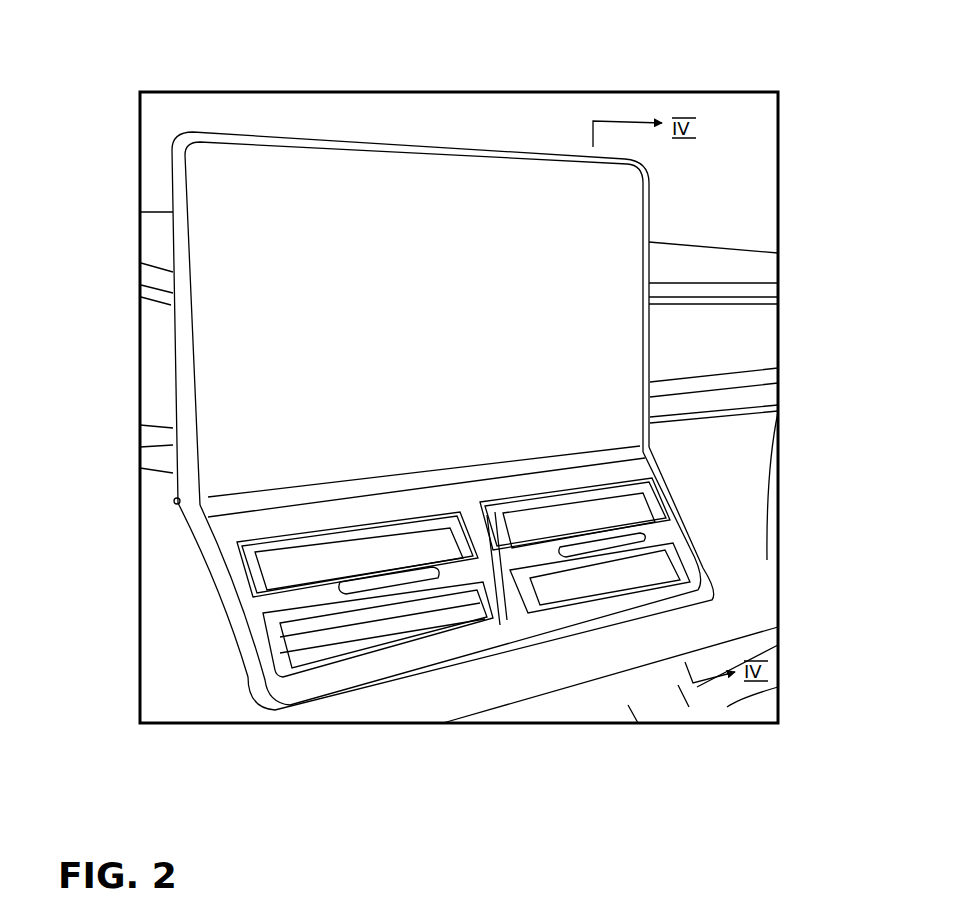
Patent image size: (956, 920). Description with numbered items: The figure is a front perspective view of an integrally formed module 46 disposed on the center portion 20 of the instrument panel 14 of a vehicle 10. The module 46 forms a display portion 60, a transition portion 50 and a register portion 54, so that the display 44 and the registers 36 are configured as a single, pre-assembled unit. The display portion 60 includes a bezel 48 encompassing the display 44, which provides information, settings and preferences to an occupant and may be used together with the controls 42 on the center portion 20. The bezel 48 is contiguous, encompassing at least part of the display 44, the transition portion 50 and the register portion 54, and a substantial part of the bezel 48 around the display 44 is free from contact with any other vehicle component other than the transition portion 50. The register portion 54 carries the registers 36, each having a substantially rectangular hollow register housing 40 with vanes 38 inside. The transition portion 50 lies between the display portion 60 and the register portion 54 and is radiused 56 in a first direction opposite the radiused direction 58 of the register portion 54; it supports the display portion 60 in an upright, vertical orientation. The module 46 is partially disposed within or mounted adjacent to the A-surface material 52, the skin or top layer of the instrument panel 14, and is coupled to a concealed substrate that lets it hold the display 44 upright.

The vehicle 10 is at (422, 72).
The instrument panel 14 is at (176, 575).
The center portion 20 is at (413, 705).
The registers 36 is at (366, 612).
The vanes 38 is at (322, 592).
The register housing 40 is at (250, 596).
The controls 42 is at (725, 705).
The display 44 is at (565, 388).
The integrally formed module 46 is at (656, 264).
The bezel 48 is at (186, 395).
The transition portion 50 is at (215, 530).
The A-surface material 52 is at (740, 488).
The register portion 54 is at (278, 637).
The radius of the transition portion 56 is at (175, 499).
The radiused direction of the register portion 58 is at (242, 635).
The display portion 60 is at (255, 328).